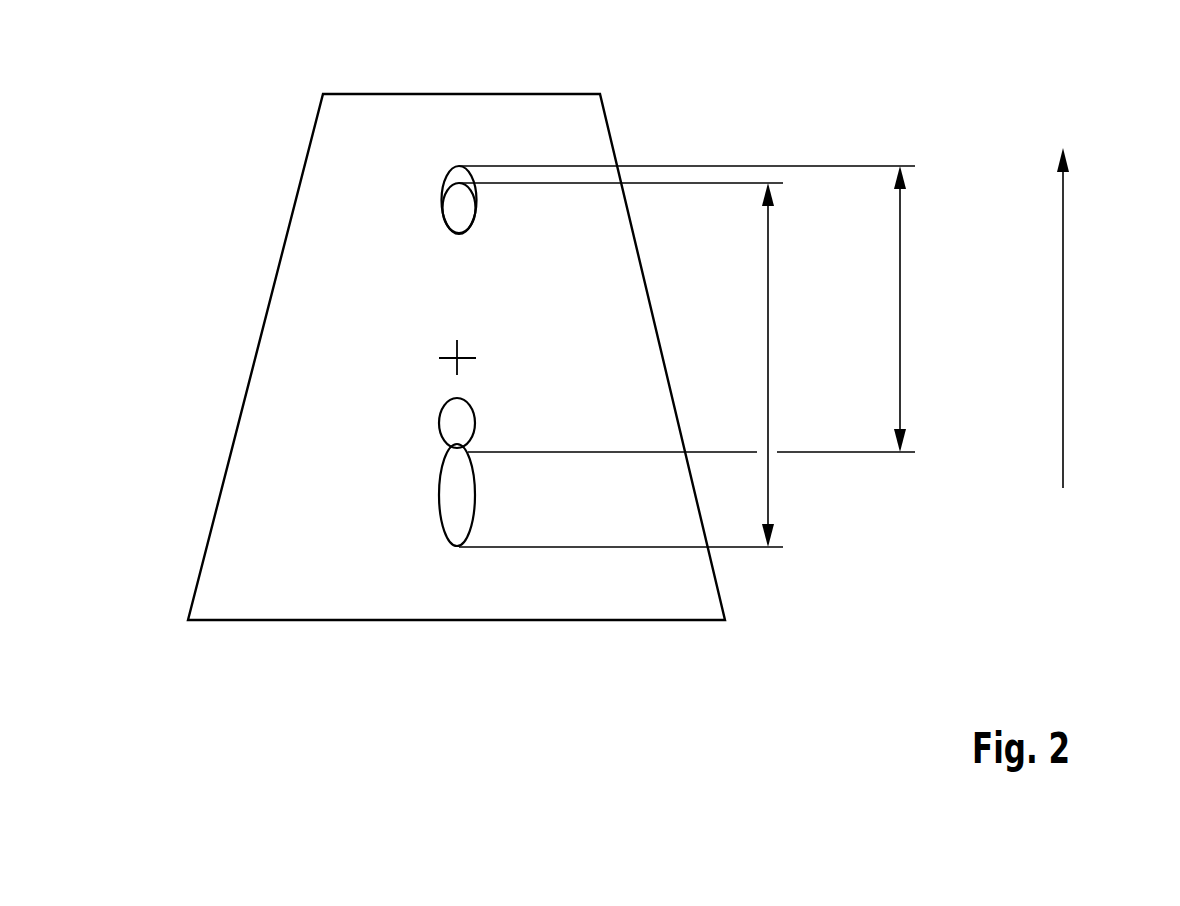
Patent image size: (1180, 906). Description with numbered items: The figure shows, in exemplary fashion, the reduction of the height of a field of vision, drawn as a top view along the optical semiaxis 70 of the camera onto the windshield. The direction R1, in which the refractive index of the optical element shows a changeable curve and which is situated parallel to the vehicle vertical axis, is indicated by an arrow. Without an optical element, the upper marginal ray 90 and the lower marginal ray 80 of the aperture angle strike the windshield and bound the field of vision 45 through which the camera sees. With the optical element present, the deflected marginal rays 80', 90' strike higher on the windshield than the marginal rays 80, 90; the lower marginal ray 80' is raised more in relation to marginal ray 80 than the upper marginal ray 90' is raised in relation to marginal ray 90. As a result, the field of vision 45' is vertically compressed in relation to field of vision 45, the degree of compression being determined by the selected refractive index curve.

The upper marginal ray 90' is at (679, 141).
The upper marginal ray 90 is at (613, 247).
The optical semiaxis 70 is at (450, 355).
The lower marginal ray 80' is at (480, 391).
The lower marginal ray 80 is at (639, 495).
The field of vision 45 is at (805, 365).
The field of vision 45' is at (941, 309).
The direction R1 is at (1063, 318).